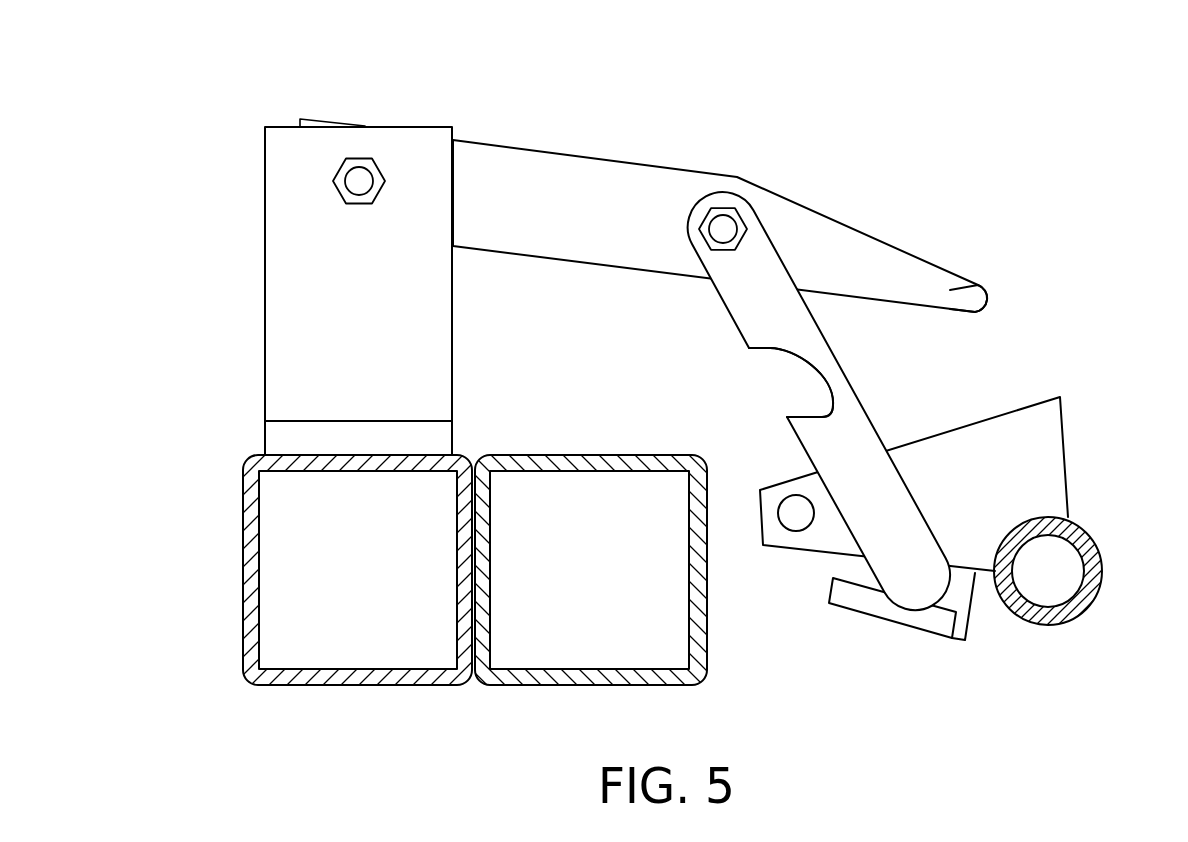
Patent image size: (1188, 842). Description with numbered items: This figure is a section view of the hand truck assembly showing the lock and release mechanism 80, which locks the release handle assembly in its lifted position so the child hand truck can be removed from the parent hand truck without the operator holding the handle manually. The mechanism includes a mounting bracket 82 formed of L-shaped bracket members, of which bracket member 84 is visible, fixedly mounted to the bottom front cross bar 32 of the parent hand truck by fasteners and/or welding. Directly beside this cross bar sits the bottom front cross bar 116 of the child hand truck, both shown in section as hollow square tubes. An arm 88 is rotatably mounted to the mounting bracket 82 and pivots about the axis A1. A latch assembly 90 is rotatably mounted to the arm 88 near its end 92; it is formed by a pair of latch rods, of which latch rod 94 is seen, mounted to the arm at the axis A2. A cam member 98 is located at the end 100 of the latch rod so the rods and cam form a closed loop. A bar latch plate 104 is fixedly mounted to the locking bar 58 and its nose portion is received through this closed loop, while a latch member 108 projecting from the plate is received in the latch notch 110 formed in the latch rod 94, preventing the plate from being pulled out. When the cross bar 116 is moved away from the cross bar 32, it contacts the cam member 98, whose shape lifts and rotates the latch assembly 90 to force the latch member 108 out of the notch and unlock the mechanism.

The lock and release mechanism 80 is at (1013, 142).
The mounting bracket 82 is at (230, 233).
The bracket member 84 is at (276, 322).
The axis A1 is at (357, 159).
The axis A2 is at (723, 205).
The arm 88 is at (548, 150).
The end of the arm 92 is at (978, 288).
The latch rod 94 is at (872, 432).
The latch assembly 90 is at (718, 323).
The latch notch 110 is at (790, 418).
The bar latch plate 104 is at (1058, 456).
The latch member 108 is at (796, 531).
The end of the latch rod 100 is at (900, 602).
The cam member 98 is at (955, 632).
The locking bar 58 is at (1103, 570).
The bottom front cross bar 32 is at (242, 570).
The bottom front cross bar 116 is at (565, 687).